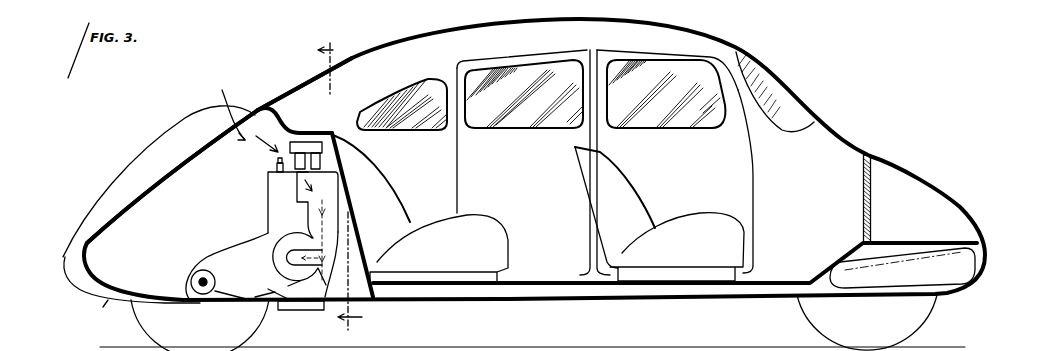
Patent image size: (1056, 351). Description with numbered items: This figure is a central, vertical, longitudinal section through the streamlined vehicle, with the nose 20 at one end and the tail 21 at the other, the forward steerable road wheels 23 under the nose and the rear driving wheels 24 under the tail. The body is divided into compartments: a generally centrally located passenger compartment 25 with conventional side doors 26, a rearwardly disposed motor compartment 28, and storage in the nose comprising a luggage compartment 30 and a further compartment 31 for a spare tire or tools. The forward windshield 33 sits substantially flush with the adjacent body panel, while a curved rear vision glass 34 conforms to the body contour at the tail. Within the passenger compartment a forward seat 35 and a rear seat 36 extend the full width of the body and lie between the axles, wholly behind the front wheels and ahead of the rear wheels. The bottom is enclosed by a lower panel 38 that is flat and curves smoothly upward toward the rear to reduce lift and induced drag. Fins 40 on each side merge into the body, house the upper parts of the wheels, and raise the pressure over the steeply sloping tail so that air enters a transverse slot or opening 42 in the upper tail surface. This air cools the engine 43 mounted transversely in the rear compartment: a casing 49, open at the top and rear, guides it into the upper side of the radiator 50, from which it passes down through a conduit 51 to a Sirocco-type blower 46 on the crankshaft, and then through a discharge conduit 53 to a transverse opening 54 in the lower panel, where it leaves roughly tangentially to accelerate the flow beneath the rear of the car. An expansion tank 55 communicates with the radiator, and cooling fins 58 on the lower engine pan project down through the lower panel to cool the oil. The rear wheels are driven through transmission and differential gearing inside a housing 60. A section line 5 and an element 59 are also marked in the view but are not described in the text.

The section line 5- 5 is at (340, 182).
The nose 20 is at (973, 219).
The tail 21 is at (65, 257).
The forward steerable road wheels 23 is at (933, 298).
The rear driving wheels 24 is at (150, 322).
The passenger compartment 25 is at (597, 127).
The doors 26 is at (756, 188).
The motor compartment 28 is at (212, 162).
The luggage compartment 30 is at (924, 196).
The compartment 31 is at (982, 258).
The forward windshield 33 is at (790, 101).
The rear vision glass 34 is at (283, 91).
The forward seat 35 is at (691, 222).
The rear seat 36 is at (472, 225).
The lower panel 38 is at (619, 298).
The fins 40 is at (150, 143).
The slot or opening 42 is at (240, 112).
The engine 43 is at (270, 208).
The blower 46 is at (283, 252).
The casing 49 is at (322, 182).
The radiator 50 is at (346, 200).
The conduit 51 is at (340, 241).
The discharge conduit 53 is at (278, 288).
The opening 54 is at (268, 303).
The expansion tank 55 is at (317, 147).
The cooling fins 58 is at (293, 311).
The firewall 59 is at (352, 208).
The housing 60 is at (192, 290).